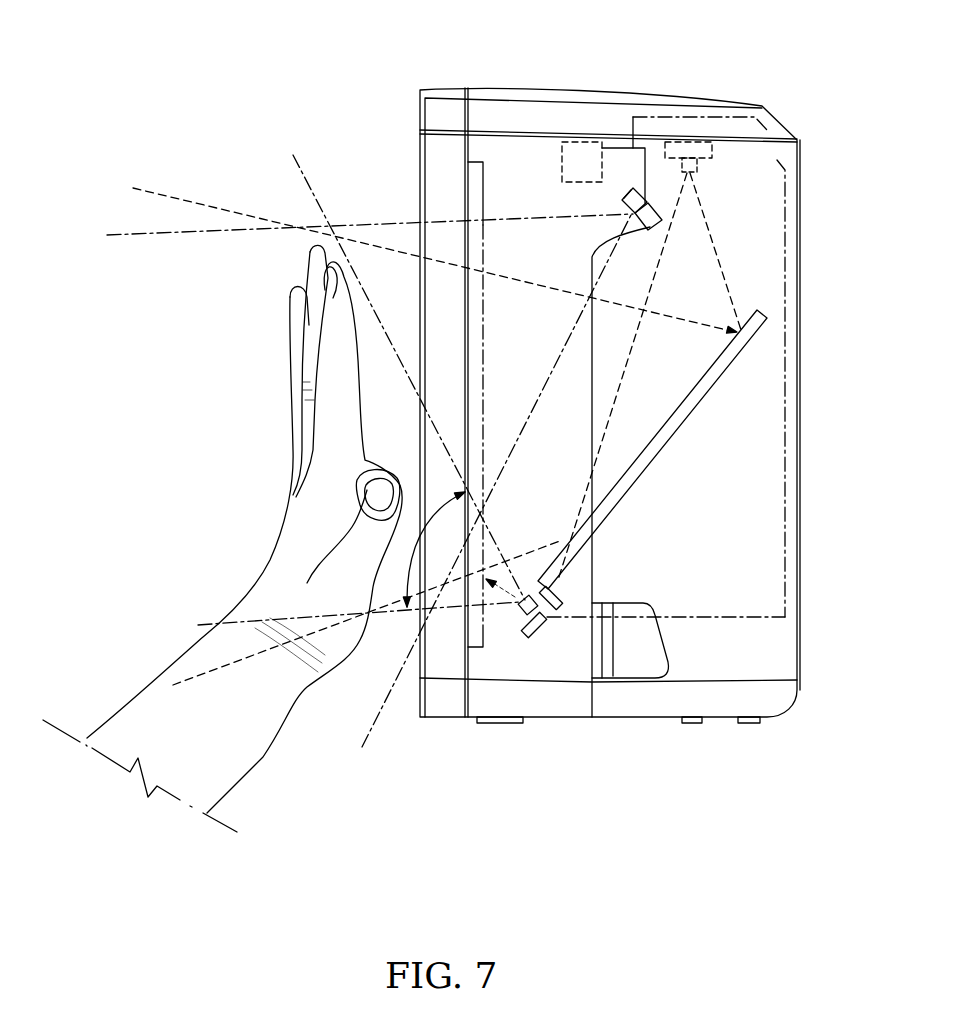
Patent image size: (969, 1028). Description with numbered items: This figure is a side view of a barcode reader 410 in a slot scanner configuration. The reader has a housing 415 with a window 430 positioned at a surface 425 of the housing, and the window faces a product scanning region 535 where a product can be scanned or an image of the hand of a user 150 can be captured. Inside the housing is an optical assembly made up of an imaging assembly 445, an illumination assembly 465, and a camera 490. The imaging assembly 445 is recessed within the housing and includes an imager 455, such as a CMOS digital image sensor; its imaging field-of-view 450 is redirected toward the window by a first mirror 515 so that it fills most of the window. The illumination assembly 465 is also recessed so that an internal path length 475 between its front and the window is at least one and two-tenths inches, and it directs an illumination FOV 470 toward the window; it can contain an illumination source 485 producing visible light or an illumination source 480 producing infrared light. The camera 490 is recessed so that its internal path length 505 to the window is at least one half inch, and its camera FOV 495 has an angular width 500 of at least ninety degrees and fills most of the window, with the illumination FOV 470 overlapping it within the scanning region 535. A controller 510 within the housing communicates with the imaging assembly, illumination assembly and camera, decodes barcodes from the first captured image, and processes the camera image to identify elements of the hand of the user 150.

The barcode reader 410 is at (296, 50).
The surface 425 is at (420, 143).
The window 430 is at (468, 208).
The internal path length 475 is at (487, 320).
The controller 510 is at (570, 142).
The illumination source 480 is at (633, 190).
The illumination assembly 465 is at (633, 166).
The illumination FOV 470 is at (528, 216).
The imaging assembly 445 is at (706, 134).
The imager 455 is at (697, 168).
The imaging field-of-view 450 is at (725, 287).
The illumination source 485 is at (650, 227).
The first mirror 515 is at (660, 453).
The internal path length 505 is at (513, 605).
The camera 490 is at (533, 637).
The camera FOV 495 is at (487, 527).
The angular width 500 is at (413, 573).
The product scanning region 535 is at (193, 407).
The housing 415 is at (798, 623).
The user 150 is at (269, 518).